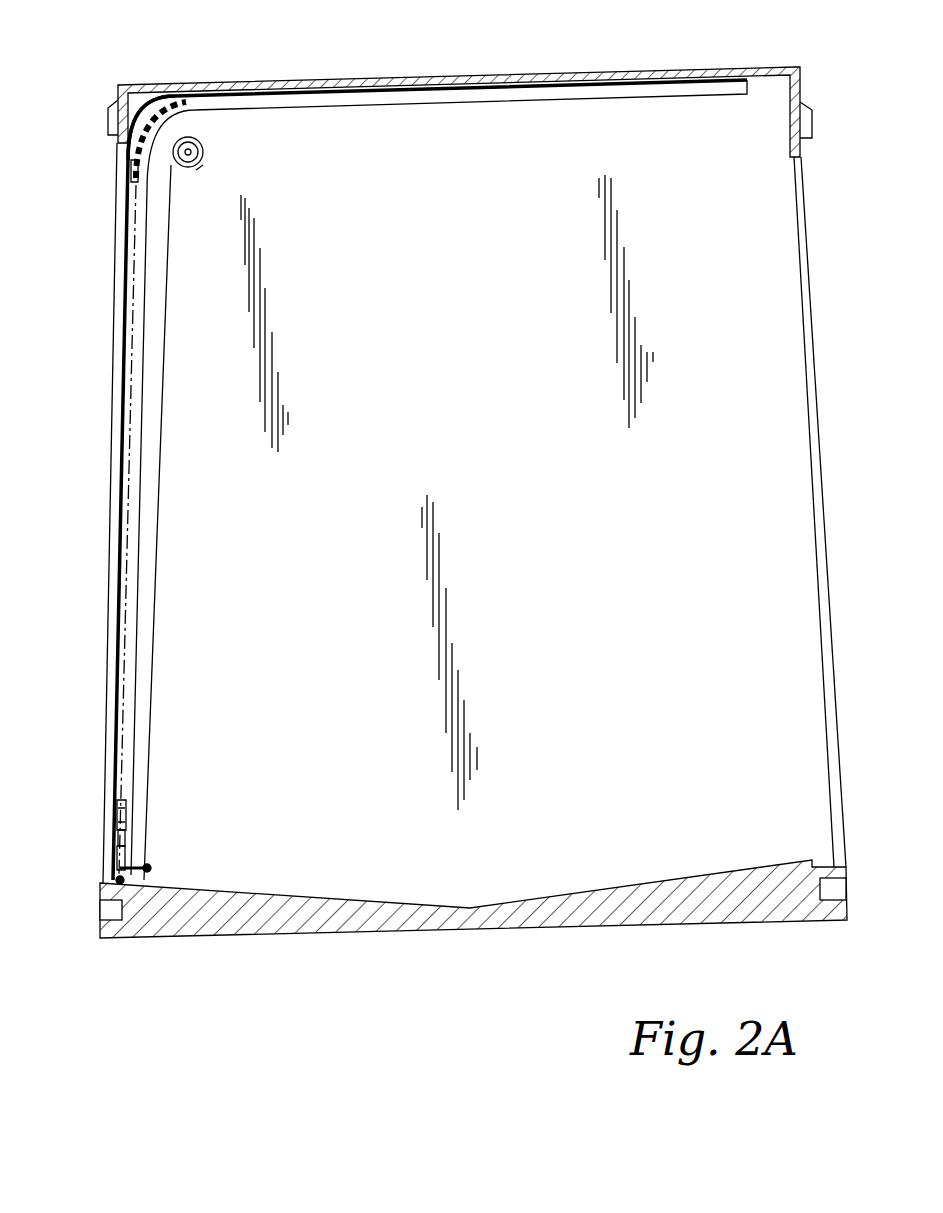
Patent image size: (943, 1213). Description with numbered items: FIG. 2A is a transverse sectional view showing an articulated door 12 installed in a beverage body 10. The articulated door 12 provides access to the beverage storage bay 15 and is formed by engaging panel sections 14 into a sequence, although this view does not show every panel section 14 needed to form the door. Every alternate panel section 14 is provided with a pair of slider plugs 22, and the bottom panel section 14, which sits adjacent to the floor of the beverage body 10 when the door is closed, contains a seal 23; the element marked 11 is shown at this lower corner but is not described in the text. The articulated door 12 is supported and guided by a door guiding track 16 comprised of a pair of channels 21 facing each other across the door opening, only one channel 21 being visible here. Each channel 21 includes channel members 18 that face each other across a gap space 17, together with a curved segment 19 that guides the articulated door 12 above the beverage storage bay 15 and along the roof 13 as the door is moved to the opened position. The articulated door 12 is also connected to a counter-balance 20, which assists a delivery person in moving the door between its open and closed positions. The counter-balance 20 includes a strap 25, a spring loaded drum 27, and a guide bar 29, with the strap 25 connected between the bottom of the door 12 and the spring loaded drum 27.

The beverage body 10 is at (230, 965).
The pivot pin 11 is at (115, 880).
The articulated door 12 is at (120, 815).
The roof 13 is at (478, 76).
The panel section 14 is at (137, 168).
The beverage storage bay 15 is at (488, 848).
The door guiding track 16 is at (101, 441).
The gap space 17 is at (130, 672).
The channel member 18 is at (123, 228).
The curved segment 19 is at (147, 103).
The counter-balance 20 is at (205, 163).
The channel 21 is at (142, 440).
The slider plug 22 is at (118, 835).
The seal 23 is at (130, 865).
The strap 25 is at (155, 592).
The spring loaded drum 27 is at (200, 165).
The guide bar 29 is at (143, 153).